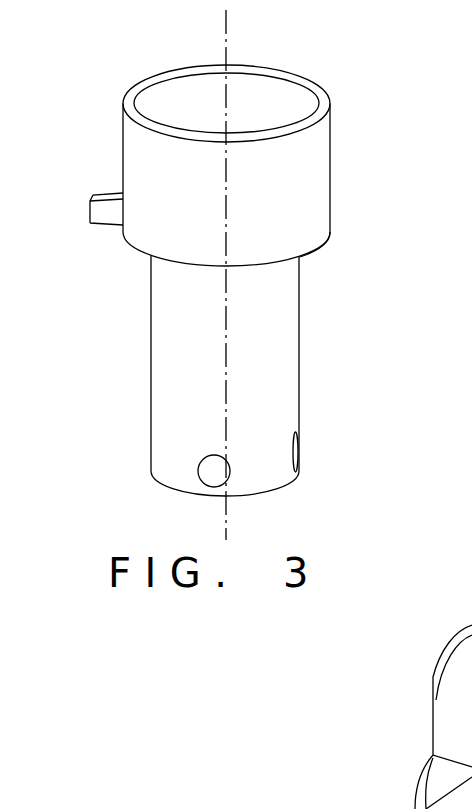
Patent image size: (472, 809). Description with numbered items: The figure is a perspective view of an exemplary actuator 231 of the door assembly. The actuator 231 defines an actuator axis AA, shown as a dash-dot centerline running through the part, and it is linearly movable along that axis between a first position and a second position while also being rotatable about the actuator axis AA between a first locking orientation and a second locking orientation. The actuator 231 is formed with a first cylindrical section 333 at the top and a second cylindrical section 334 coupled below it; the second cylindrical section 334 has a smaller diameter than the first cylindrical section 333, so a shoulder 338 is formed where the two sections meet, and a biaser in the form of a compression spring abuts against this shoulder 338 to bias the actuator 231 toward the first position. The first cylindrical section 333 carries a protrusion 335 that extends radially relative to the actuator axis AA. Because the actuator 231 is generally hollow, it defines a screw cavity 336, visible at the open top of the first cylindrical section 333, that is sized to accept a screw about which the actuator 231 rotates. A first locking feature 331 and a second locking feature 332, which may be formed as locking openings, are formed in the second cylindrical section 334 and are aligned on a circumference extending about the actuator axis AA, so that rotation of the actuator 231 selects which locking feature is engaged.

The actuator 231 is at (220, 263).
The first locking feature 331 is at (205, 478).
The second locking feature 332 is at (298, 450).
The first cylindrical section 333 is at (329, 142).
The second cylindrical section 334 is at (160, 347).
The protrusion 335 is at (100, 197).
The screw cavity 336 is at (253, 100).
The shoulder 338 is at (308, 253).
The actuator axis AA is at (223, 28).